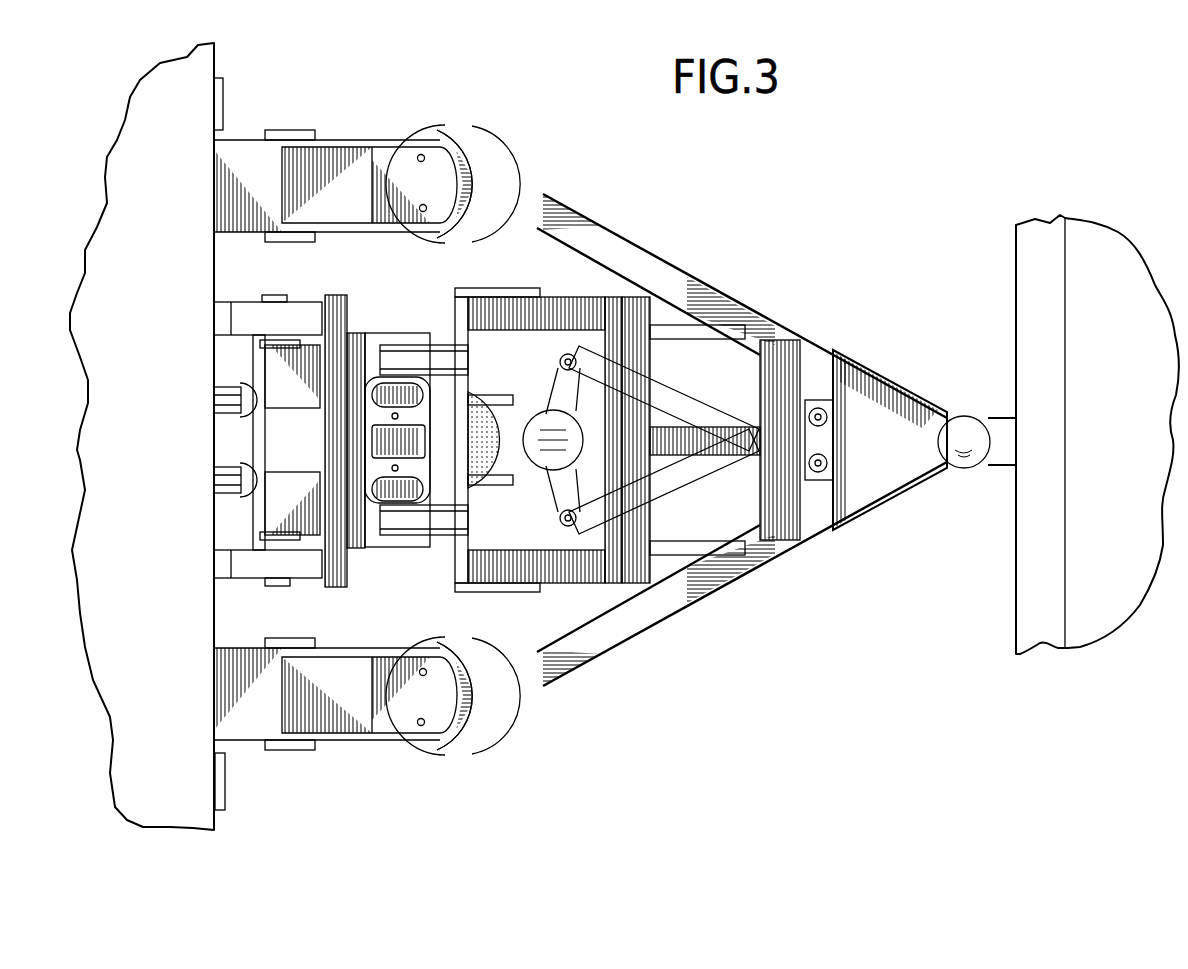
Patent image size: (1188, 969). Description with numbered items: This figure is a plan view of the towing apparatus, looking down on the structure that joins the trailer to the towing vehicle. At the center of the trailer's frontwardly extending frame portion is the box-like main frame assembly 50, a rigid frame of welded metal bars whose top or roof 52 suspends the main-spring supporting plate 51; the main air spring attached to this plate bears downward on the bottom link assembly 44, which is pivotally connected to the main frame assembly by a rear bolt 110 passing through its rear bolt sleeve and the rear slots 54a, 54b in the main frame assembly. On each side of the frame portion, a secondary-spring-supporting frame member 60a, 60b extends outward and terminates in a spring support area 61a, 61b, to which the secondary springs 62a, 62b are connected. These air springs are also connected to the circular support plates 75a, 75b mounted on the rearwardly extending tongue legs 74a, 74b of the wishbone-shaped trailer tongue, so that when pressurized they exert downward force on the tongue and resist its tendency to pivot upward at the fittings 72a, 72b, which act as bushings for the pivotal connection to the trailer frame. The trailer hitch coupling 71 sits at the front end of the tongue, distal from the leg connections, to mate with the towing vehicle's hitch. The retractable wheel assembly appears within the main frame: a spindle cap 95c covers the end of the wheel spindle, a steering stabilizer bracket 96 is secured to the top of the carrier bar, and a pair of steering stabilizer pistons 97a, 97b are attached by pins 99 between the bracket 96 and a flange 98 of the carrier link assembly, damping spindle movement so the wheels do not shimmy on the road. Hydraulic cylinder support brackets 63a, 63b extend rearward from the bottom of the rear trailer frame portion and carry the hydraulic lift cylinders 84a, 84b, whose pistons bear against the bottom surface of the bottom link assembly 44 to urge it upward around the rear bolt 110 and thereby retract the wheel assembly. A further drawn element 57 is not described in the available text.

The bottom link assembly 44 is at (308, 540).
The main frame assembly 50 is at (246, 308).
The main-spring supporting plate 51 is at (408, 490).
The roof 52 is at (397, 320).
The rear slot 54a is at (325, 523).
The rear slot 54b is at (320, 358).
The cross member 57 is at (727, 525).
The secondary-spring-supporting frame member 60a is at (250, 748).
The secondary-spring-supporting frame member 60b is at (243, 157).
The spring support area 61a is at (463, 758).
The spring support area 61b is at (457, 128).
The secondary spring 62a is at (507, 717).
The secondary spring 62b is at (500, 143).
The hydraulic cylinder support bracket 63a is at (226, 466).
The hydraulic cylinder support bracket 63b is at (228, 388).
The trailer hitch coupling 71 is at (948, 468).
The fitting 72a is at (303, 642).
The fitting 72b is at (305, 243).
The tongue leg 74a is at (668, 602).
The tongue leg 74b is at (660, 266).
The circular support plate 75a is at (545, 690).
The circular support plate 75b is at (540, 165).
The hydraulic lift cylinder 84a is at (240, 484).
The hydraulic lift cylinder 84b is at (240, 400).
The spindle cap 95c is at (547, 427).
The steering stabilizer bracket 96 is at (550, 485).
The steering stabilizer piston 97a is at (768, 495).
The steering stabilizer piston 97b is at (710, 372).
The flange 98 is at (817, 440).
The pin 99 is at (568, 352).
The rear bolt 110 is at (267, 587).